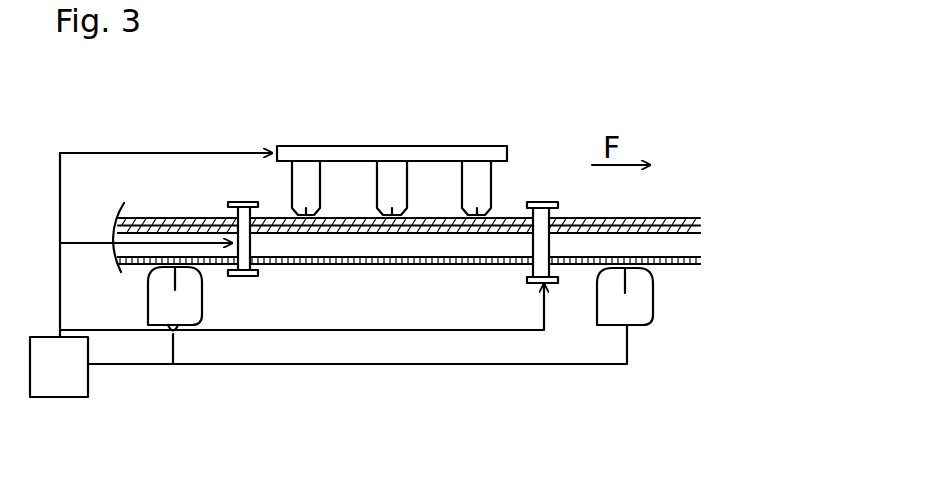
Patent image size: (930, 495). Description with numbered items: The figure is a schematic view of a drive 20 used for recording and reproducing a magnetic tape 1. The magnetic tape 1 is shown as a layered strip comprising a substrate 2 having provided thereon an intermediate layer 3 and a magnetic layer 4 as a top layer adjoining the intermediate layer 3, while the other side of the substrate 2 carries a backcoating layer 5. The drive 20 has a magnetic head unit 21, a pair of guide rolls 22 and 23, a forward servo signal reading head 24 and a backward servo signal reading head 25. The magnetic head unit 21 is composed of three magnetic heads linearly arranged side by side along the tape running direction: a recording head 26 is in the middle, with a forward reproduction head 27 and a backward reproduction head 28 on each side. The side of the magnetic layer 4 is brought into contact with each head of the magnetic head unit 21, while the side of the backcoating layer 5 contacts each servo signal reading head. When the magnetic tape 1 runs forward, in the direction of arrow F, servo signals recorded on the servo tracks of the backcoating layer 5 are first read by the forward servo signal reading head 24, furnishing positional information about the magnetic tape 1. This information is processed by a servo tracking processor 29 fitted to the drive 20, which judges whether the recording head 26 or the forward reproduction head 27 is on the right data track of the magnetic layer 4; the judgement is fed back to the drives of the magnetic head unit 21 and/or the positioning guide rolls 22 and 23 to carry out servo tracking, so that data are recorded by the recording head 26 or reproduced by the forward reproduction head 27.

The magnetic tape 1 is at (439, 245).
The substrate 2 is at (700, 259).
The intermediate layer 3 is at (698, 234).
The magnetic layer 4 is at (700, 218).
The backcoating layer 5 is at (700, 272).
The drive 20 is at (576, 104).
The magnetic head unit 21 is at (493, 144).
The guide roll 22 is at (527, 280).
The guide roll 23 is at (259, 274).
The forward servo signal reading head 24 is at (650, 320).
The backward servo signal reading head 25 is at (148, 300).
The recording head 26 is at (390, 178).
The forward reproduction head 27 is at (302, 178).
The backward reproduction head 28 is at (473, 178).
The servo tracking processor 29 is at (60, 386).